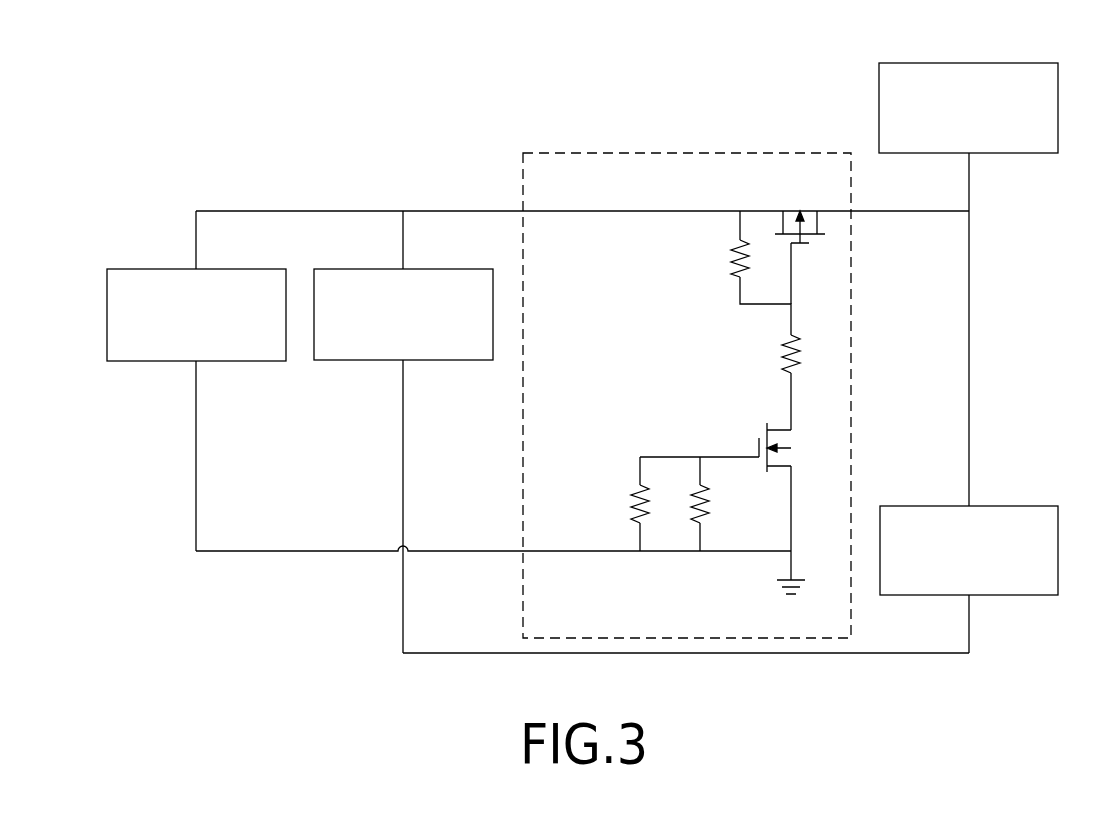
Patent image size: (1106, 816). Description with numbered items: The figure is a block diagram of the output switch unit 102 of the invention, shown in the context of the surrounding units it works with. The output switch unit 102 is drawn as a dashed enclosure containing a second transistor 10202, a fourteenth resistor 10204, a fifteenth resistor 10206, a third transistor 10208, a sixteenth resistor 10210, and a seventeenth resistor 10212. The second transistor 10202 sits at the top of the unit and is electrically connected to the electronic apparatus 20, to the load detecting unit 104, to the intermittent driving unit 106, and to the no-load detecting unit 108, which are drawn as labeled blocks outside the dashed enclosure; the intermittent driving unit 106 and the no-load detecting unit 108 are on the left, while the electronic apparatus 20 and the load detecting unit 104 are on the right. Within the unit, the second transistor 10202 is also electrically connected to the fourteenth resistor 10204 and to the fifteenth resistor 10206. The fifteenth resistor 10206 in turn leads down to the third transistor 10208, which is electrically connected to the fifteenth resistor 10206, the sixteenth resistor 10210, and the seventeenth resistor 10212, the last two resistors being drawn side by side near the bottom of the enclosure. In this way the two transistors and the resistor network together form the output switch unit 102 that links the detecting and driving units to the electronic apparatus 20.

The electronic apparatus 20 is at (971, 70).
The output switch unit 102 is at (687, 160).
The load detecting unit 104 is at (998, 512).
The intermittent driving unit 106 is at (373, 275).
The no-load detecting unit 108 is at (166, 276).
The second transistor 10202 is at (793, 207).
The fourteenth resistor 10204 is at (732, 250).
The fifteenth resistor 10206 is at (782, 348).
The third transistor 10208 is at (758, 437).
The sixteenth resistor 10210 is at (688, 502).
The seventeenth resistor 10212 is at (628, 500).